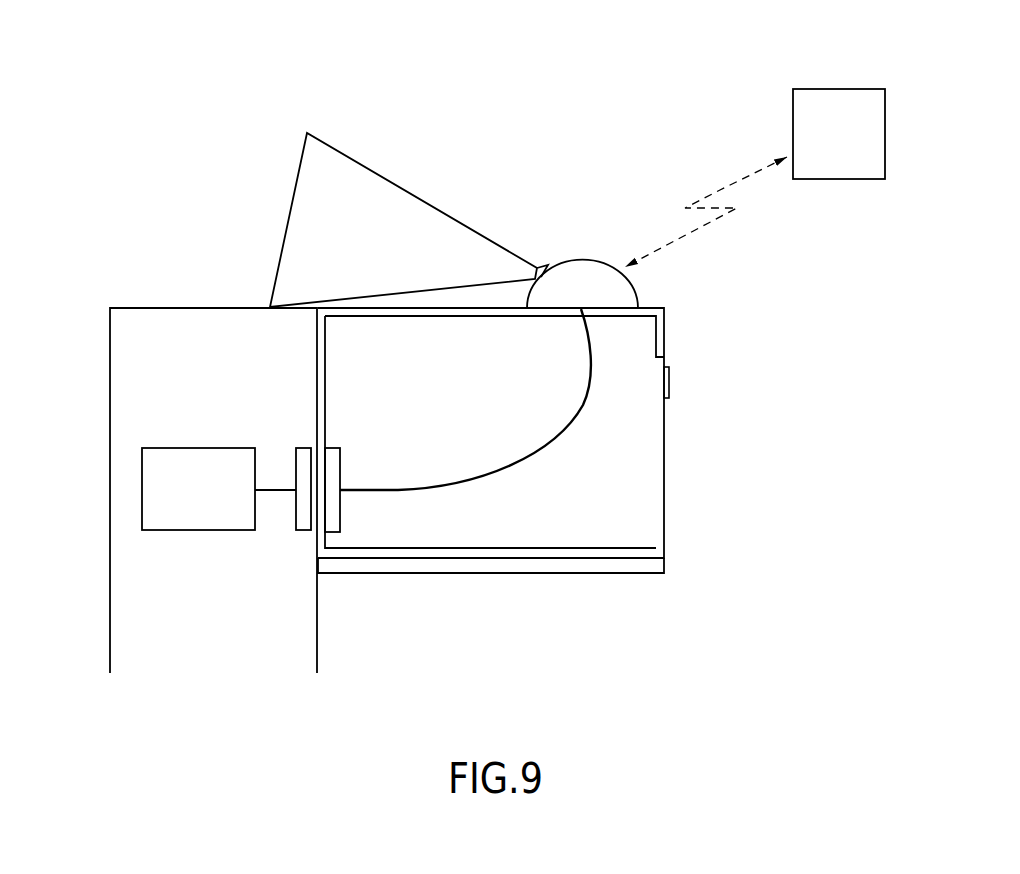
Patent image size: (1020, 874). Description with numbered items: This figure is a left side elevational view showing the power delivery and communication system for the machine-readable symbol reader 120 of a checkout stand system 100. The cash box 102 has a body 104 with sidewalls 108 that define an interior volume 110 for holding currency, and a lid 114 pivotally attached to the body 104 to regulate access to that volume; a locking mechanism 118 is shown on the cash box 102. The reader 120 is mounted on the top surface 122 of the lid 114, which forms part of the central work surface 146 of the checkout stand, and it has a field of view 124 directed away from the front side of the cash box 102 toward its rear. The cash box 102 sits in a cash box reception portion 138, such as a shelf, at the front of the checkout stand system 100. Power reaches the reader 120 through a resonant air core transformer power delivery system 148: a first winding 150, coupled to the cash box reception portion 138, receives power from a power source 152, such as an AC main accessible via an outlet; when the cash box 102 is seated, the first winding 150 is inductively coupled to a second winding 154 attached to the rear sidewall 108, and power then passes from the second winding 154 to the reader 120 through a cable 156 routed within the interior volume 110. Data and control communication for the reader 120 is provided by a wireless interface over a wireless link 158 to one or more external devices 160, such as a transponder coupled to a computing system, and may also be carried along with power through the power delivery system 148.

The checkout stand system 100 is at (90, 342).
The cash box 102 is at (632, 108).
The body 104 is at (688, 445).
The sidewalls 108 is at (325, 360).
The interior volume 110 is at (518, 518).
The lid 114 is at (682, 298).
The locking mechanism 118 is at (670, 383).
The machine-readable symbol reader 120 is at (585, 260).
The top surface 122 is at (468, 307).
The field of view 124 is at (332, 145).
The cash box reception portion 138 is at (590, 557).
The central work surface 146 is at (203, 307).
The resonant air core transformer power delivery system 148 is at (248, 593).
The first winding 150 is at (303, 448).
The power source 152 is at (178, 448).
The second winding 154 is at (340, 463).
The cable 156 is at (522, 465).
The wireless link 158 is at (720, 190).
The external devices 160 is at (836, 89).